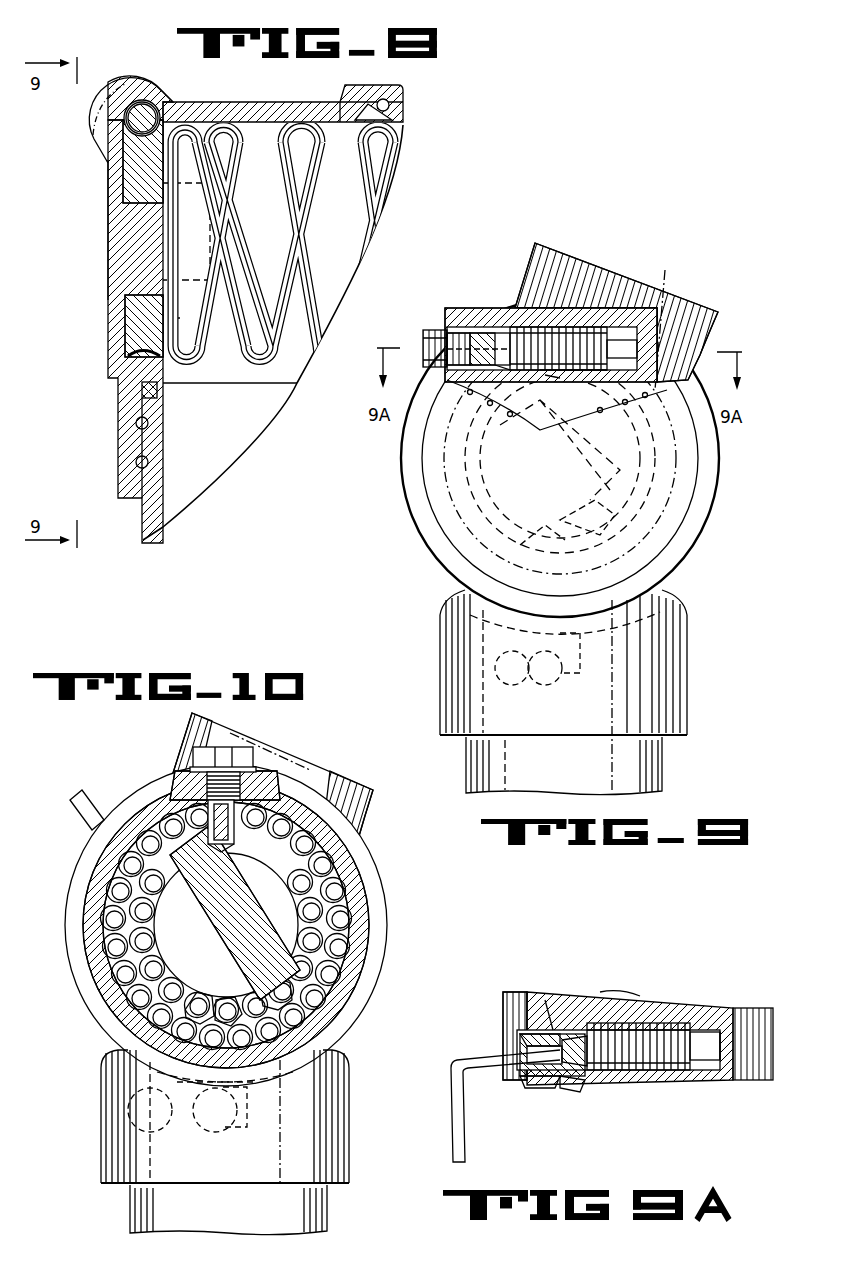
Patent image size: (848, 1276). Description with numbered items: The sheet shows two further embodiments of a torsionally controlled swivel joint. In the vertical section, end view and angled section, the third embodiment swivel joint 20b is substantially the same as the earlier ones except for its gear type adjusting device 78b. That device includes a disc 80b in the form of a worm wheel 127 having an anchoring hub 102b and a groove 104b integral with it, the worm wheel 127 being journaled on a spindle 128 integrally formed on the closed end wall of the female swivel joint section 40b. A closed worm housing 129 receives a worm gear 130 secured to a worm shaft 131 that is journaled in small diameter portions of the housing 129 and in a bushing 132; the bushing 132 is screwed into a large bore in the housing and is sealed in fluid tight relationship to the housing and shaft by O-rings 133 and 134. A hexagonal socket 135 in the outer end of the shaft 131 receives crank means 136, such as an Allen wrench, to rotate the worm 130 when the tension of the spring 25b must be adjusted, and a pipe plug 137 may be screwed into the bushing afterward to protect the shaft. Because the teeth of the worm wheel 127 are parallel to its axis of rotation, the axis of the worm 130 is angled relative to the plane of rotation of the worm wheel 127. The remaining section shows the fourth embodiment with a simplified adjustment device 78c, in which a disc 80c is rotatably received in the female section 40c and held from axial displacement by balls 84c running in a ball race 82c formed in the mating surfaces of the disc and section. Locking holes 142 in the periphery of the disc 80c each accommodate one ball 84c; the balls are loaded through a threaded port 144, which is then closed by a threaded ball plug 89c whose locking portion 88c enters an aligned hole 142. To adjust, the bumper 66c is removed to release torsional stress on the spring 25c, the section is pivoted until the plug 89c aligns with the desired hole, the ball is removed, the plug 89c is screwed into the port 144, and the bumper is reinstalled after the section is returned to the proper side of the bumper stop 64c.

In FIG. 8, the torsionally controlled swivel joint 20b is at (407, 97).
In FIG. 9, the torsionally controlled swivel joint 20b is at (412, 547).
In FIG. 9A, the torsionally controlled swivel joint 20b is at (731, 984).
In FIG. 8, the spring 25b is at (368, 162).
In FIG. 9, the spring 25b is at (497, 452).
In FIG. 8, the female swivel joint section 40b is at (258, 108).
In FIG. 9, the female swivel joint section 40b is at (721, 458).
In FIG. 9A, the female swivel joint section 40b is at (504, 1001).
In FIG. 8, the adjusting device 78b is at (153, 96).
In FIG. 9, the adjusting device 78b is at (634, 309).
In FIG. 9A, the adjusting device 78b is at (640, 1005).
In FIG. 8, the disc 80b is at (108, 176).
In FIG. 9, the disc 80b is at (455, 492).
In FIG. 9A, the disc 80b is at (728, 1092).
In FIG. 8, the anchoring hub 102b is at (162, 314).
In FIG. 9, the anchoring hub 102b is at (524, 555).
In FIG. 9A, the anchoring hub 102b is at (553, 1004).
In FIG. 8, the groove 104b is at (172, 290).
In FIG. 9, the groove 104b is at (578, 516).
In FIG. 9A, the groove 104b is at (620, 1000).
In FIG. 8, the worm wheel 127 is at (128, 191).
In FIG. 9, the worm wheel 127 is at (600, 398).
In FIG. 9A, the worm wheel 127 is at (724, 1072).
In FIG. 8, the spindle 128 is at (108, 236).
In FIG. 8, the worm housing 129 is at (122, 118).
In FIG. 9, the worm housing 129 is at (586, 330).
In FIG. 9A, the worm housing 129 is at (678, 1010).
In FIG. 8, the worm gear 130 is at (130, 125).
In FIG. 9, the worm gear 130 is at (557, 328).
In FIG. 9A, the worm gear 130 is at (647, 1081).
In FIG. 8, the worm shaft 131 is at (138, 134).
In FIG. 9, the worm shaft 131 is at (500, 332).
In FIG. 9A, the worm shaft 131 is at (592, 1080).
In FIG. 9, the bushing 132 is at (470, 325).
In FIG. 9A, the bushing 132 is at (518, 1046).
In FIG. 9, the O-ring 133 is at (472, 320).
In FIG. 9A, the O-ring 133 is at (556, 1098).
In FIG. 9, the O-ring 134 is at (502, 371).
In FIG. 9A, the O-ring 134 is at (585, 1100).
In FIG. 9, the hexagonal socket 135 is at (432, 336).
In FIG. 9A, the hexagonal socket 135 is at (520, 1082).
In FIG. 9A, the crank means 136 is at (450, 1080).
In FIG. 9, the pipe plug 137 is at (428, 346).
In FIG. 10, the female section 40c is at (122, 798).
In FIG. 10, the spring 25c is at (228, 887).
In FIG. 10, the adjustment device 78c is at (325, 943).
In FIG. 10, the disc 80c is at (336, 893).
In FIG. 10, the ball race 82c is at (112, 930).
In FIG. 10, the balls 84c is at (320, 867).
In FIG. 10, the locking portion 88c is at (220, 815).
In FIG. 10, the threaded ball plug 89c is at (193, 757).
In FIG. 10, the locking holes 142 is at (130, 920).
In FIG. 10, the threaded port 144 is at (230, 782).
In FIG. 10, the bumper stop 64c is at (222, 1137).
In FIG. 10, the bumper 66c is at (205, 1150).